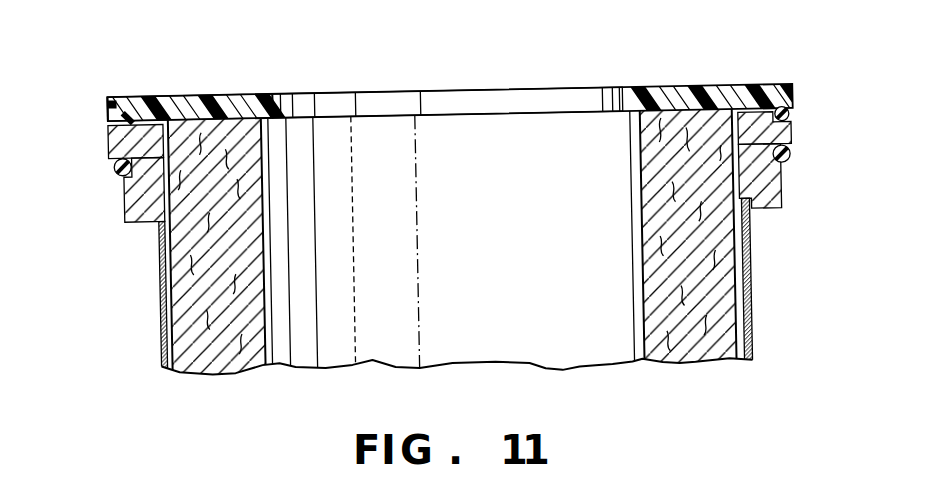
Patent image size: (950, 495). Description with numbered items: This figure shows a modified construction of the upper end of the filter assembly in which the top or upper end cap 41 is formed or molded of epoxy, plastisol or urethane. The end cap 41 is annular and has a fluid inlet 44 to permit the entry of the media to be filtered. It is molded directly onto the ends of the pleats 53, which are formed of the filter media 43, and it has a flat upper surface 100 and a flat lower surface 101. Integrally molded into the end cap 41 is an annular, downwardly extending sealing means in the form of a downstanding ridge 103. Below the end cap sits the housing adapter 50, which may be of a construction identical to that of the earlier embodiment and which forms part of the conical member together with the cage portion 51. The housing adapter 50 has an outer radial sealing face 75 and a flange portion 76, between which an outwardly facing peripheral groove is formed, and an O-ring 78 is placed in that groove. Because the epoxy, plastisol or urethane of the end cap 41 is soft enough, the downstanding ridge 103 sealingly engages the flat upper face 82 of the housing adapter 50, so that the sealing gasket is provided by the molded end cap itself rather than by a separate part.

The upper end cap 41 is at (727, 86).
The flat upper surface 100 is at (237, 96).
The fluid inlet 44 is at (613, 90).
The flat upper face 82 is at (119, 100).
The flat lower surface 101 is at (158, 124).
The housing adapter 50 is at (125, 197).
The pleats 53 is at (190, 297).
The media 43 is at (660, 205).
The flange portion 76 is at (797, 136).
The downstanding ridge 103 is at (780, 113).
The outer radial sealing face 75 is at (782, 198).
The O-ring 78 is at (796, 152).
The cage portion 51 is at (752, 281).